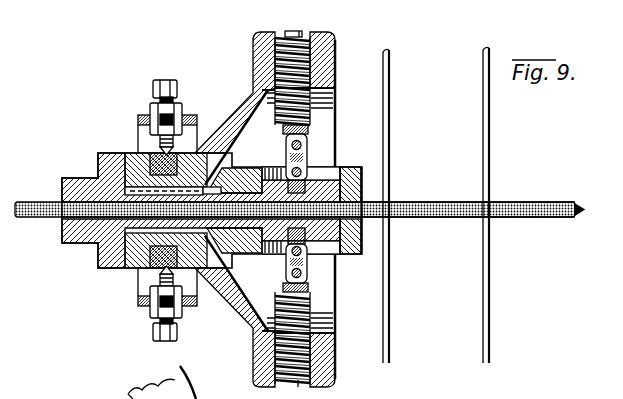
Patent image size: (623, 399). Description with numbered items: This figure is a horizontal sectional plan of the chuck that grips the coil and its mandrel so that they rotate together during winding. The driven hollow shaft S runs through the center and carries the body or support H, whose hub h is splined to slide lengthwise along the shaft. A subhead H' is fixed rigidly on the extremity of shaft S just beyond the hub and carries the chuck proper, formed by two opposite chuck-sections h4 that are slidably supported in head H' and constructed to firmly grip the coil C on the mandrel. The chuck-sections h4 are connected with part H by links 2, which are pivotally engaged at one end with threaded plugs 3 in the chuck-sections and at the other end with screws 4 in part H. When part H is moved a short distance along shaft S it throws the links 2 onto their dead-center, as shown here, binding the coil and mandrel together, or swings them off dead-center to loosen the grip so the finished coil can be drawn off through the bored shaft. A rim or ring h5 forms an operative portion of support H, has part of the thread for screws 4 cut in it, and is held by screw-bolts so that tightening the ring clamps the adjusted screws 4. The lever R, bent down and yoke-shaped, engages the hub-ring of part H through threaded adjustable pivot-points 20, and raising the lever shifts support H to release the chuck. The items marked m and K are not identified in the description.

The shaft S is at (88, 248).
The hub h is at (130, 270).
The chuck-sections h4 is at (337, 172).
The rim or ring h5 is at (337, 48).
The body or support H is at (235, 209).
The subhead H' is at (390, 205).
The main lever R is at (138, 117).
The pivot-points 20 is at (160, 148).
The links 2 is at (284, 150).
The threaded plugs 3 is at (311, 180).
The screws 4 is at (312, 108).
The coil C is at (41, 210).
The shaft end m is at (621, 210).
The rod K is at (392, 324).